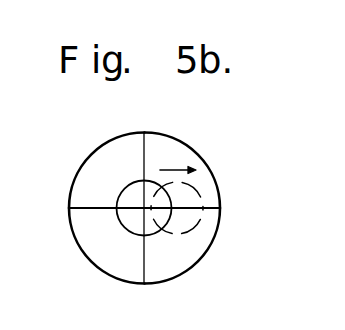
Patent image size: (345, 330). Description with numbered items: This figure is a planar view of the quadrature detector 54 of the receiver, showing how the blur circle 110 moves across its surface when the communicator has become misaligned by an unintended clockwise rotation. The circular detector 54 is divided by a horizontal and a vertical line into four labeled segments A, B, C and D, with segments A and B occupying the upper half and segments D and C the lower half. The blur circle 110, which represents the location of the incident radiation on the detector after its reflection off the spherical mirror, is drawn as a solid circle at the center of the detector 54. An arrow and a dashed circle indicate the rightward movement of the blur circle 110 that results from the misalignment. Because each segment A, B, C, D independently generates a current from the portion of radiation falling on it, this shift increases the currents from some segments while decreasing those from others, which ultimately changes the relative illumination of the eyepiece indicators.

The quadrature detector 54 is at (163, 208).
The blur circle 110 is at (123, 188).
The detector segment A is at (107, 171).
The detector segment B is at (182, 171).
The detector segment C is at (182, 246).
The detector segment D is at (107, 246).